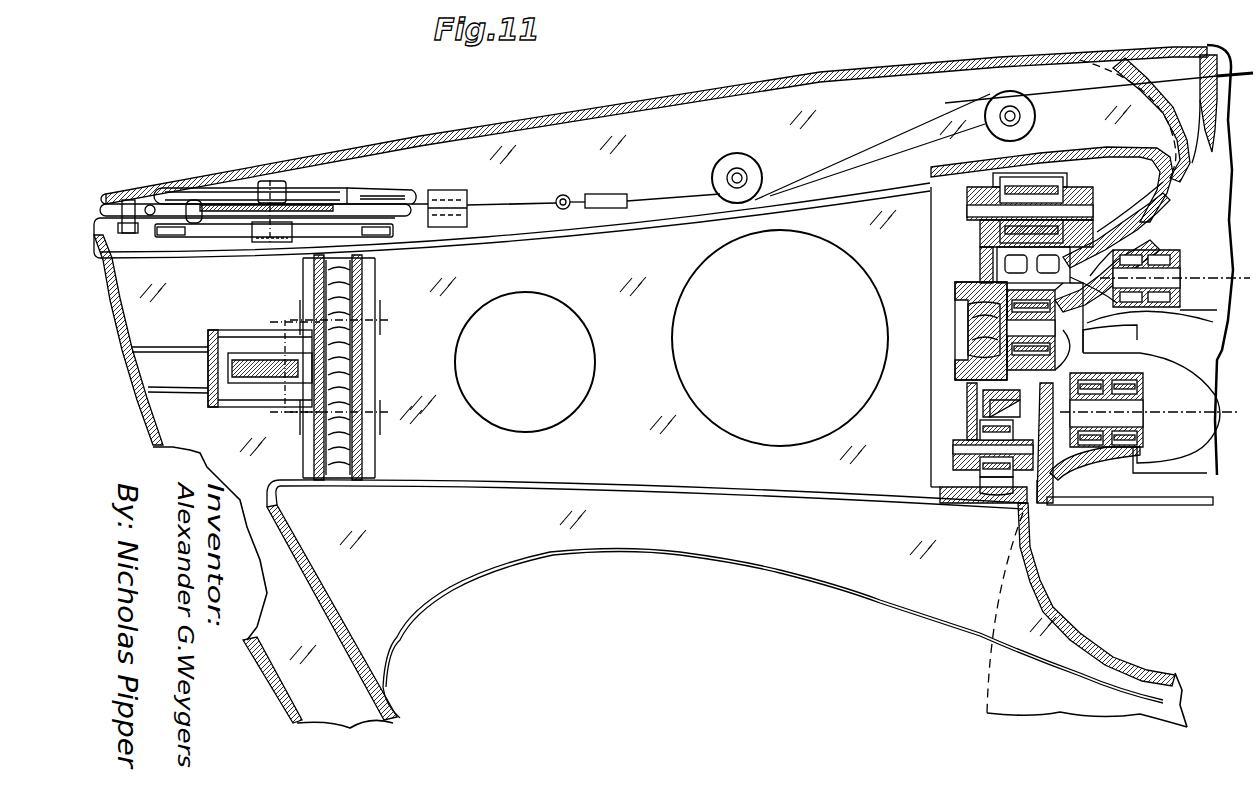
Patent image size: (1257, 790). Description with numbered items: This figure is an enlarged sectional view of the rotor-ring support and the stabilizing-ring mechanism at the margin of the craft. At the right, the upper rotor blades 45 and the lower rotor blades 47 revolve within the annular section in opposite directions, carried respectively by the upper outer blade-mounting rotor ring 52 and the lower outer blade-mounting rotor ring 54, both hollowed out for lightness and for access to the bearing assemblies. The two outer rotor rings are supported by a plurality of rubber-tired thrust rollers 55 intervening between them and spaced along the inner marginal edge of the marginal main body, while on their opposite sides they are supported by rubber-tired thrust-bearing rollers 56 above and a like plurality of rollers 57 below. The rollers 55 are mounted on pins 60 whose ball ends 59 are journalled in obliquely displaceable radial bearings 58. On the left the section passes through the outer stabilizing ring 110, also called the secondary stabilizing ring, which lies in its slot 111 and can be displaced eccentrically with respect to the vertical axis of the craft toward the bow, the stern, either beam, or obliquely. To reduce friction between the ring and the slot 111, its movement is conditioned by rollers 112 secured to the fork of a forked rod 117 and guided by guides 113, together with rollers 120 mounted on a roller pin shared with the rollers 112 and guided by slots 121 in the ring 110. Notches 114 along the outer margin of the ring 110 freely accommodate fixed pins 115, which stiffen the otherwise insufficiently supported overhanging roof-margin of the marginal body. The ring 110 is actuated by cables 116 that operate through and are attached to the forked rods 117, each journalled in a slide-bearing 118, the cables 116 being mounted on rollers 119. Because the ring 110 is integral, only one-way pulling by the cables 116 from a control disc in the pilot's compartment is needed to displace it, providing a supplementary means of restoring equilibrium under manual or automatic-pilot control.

The upper rotor blades 45 is at (1200, 332).
The lower rotor blades 47 is at (1205, 442).
The upper outer blade-mounting rotor ring 52 is at (1207, 378).
The lower outer blade-mounting rotor ring 54 is at (1195, 488).
The rubber-tired thrust rollers 55 is at (985, 412).
The rubber-tired thrust-bearing rollers 56 is at (1040, 175).
The rubber-tired thrust-bearing rollers 57 is at (987, 500).
The obliquely displaceable radial bearings 58 is at (960, 312).
The ball ends 59 is at (968, 333).
The pins 60 is at (965, 348).
The outer stabilizing ring 110 is at (236, 200).
The slot 111 is at (200, 205).
The rollers 112 is at (248, 242).
The guides 113 is at (222, 235).
The notches 114 is at (158, 200).
The fixed pins 115 is at (122, 205).
The cables 116 is at (656, 205).
The forked rods 117 is at (522, 200).
The slide-bearing 118 is at (450, 190).
The rollers 119 is at (736, 165).
The rollers 120 is at (290, 205).
The slots 121 is at (258, 205).